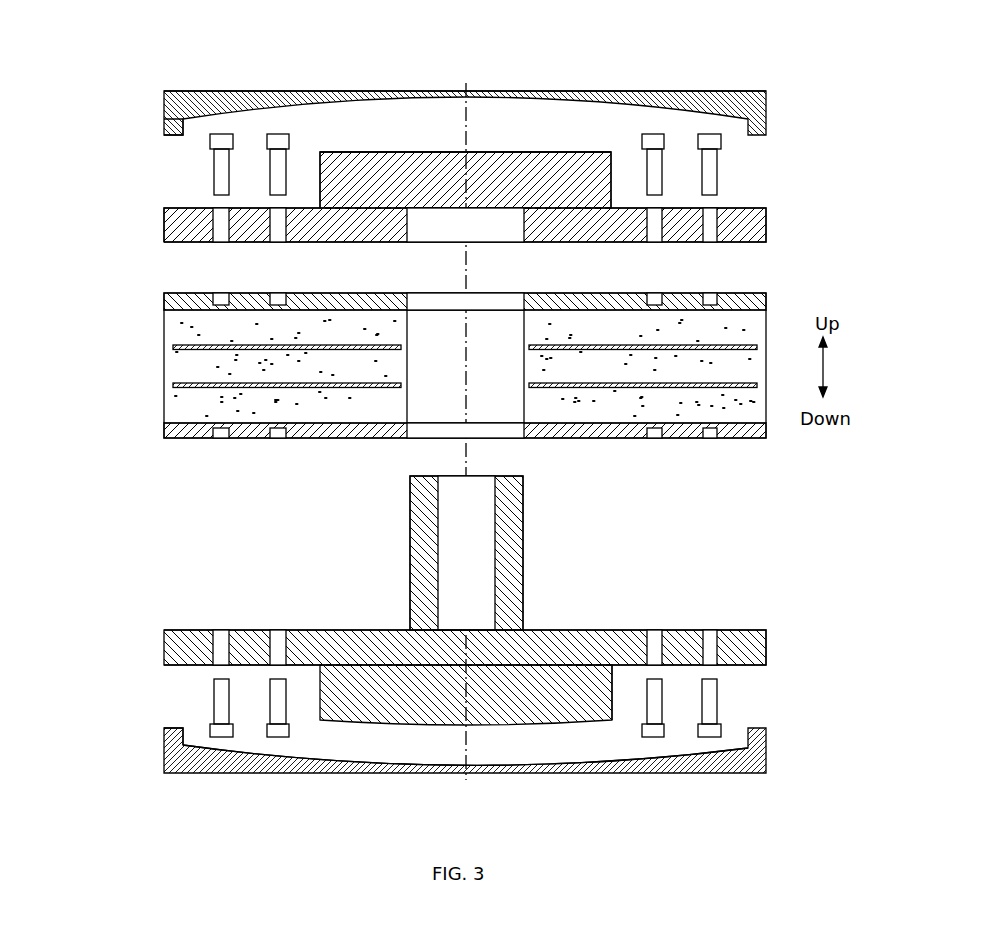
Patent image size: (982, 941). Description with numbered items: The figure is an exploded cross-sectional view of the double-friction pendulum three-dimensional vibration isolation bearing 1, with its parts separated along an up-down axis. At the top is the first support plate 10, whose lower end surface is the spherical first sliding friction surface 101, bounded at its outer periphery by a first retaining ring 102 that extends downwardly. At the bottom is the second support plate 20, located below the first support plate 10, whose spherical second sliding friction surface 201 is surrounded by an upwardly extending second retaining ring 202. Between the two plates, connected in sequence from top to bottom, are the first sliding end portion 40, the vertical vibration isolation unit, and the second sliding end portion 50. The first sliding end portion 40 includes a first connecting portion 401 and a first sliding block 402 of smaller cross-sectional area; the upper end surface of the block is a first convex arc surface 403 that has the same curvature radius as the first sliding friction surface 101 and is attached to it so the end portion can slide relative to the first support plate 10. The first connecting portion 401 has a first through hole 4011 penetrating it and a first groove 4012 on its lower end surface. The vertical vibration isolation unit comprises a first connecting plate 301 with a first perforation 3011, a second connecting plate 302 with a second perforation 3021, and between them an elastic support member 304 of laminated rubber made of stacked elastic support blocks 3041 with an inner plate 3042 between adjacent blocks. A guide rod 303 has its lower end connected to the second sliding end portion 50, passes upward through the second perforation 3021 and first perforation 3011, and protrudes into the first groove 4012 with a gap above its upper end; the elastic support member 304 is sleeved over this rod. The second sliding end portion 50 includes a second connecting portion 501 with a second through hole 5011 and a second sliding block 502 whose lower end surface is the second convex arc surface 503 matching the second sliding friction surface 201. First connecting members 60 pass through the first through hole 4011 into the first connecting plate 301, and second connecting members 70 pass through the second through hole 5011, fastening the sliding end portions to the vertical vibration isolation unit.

The double-friction pendulum three-dimensional vibration isolation bearing 1 is at (133, 77).
The first support plate 10 is at (430, 86).
The first sliding friction surface 101 is at (307, 91).
The first retaining ring 102 is at (165, 127).
The first connecting member 60 is at (220, 175).
The first sliding end portion 40 is at (532, 192).
The first connecting portion 401 is at (505, 224).
The first through hole 4011 is at (653, 232).
The first groove 4012 is at (442, 228).
The first sliding block 402 is at (612, 180).
The first convex arc surface 403 is at (577, 149).
The first connecting plate 301 is at (465, 283).
The first perforation 3011 is at (485, 307).
The elastic support member 304 is at (392, 365).
The elastic support blocks 3041 is at (202, 333).
The inner plates 3042 is at (185, 348).
The second connecting plate 302 is at (465, 453).
The second perforation 3021 is at (495, 430).
The guide rod 303 is at (510, 560).
The second sliding end portion 50 is at (506, 624).
The second connecting portion 501 is at (479, 594).
The second through hole 5011 is at (213, 637).
The second sliding block 502 is at (580, 690).
The second convex arc surface 503 is at (613, 703).
The second connecting member 70 is at (223, 705).
The second support plate 20 is at (433, 771).
The second sliding friction surface 201 is at (277, 758).
The second retaining ring 202 is at (170, 735).